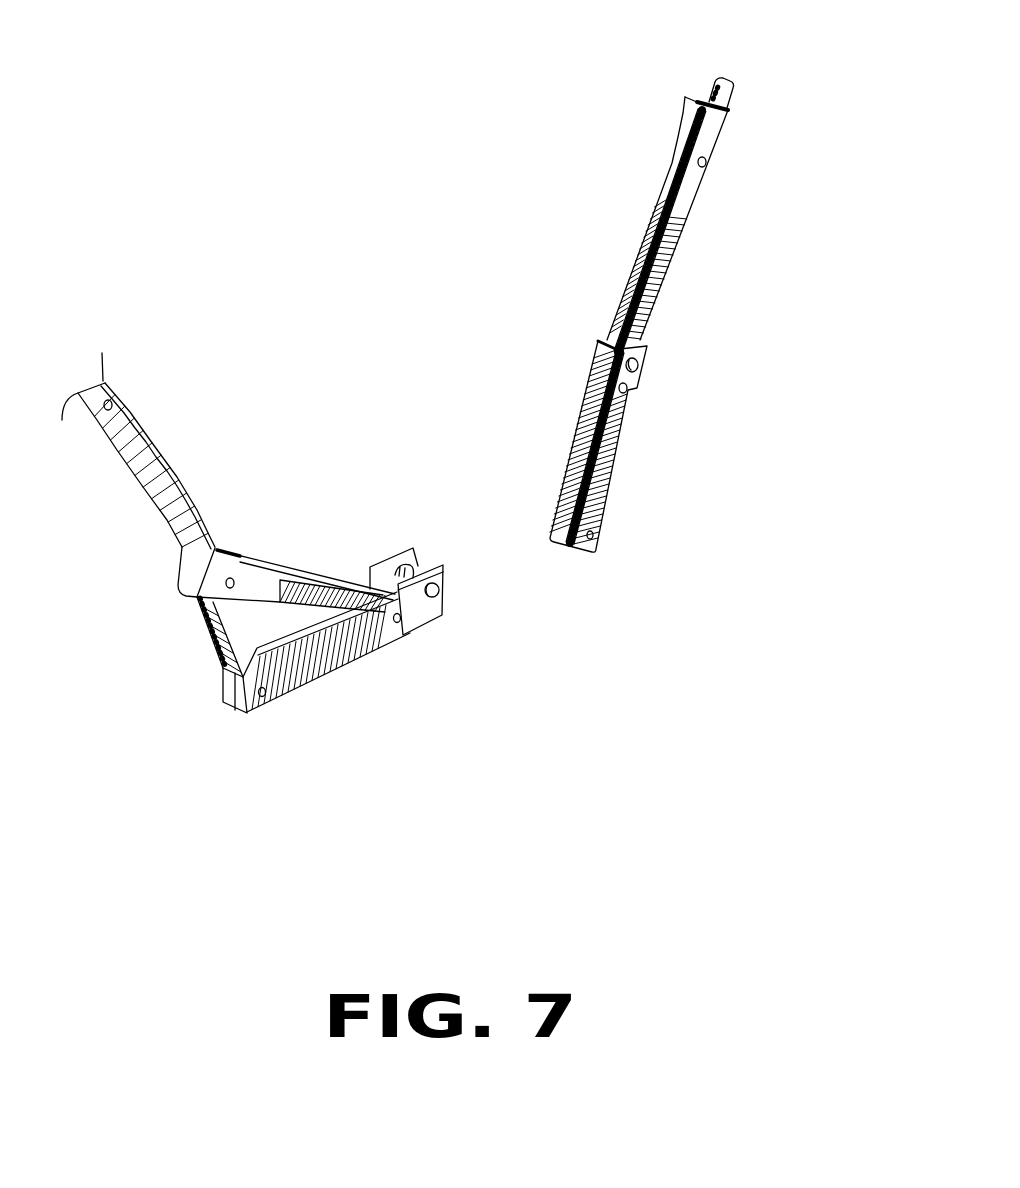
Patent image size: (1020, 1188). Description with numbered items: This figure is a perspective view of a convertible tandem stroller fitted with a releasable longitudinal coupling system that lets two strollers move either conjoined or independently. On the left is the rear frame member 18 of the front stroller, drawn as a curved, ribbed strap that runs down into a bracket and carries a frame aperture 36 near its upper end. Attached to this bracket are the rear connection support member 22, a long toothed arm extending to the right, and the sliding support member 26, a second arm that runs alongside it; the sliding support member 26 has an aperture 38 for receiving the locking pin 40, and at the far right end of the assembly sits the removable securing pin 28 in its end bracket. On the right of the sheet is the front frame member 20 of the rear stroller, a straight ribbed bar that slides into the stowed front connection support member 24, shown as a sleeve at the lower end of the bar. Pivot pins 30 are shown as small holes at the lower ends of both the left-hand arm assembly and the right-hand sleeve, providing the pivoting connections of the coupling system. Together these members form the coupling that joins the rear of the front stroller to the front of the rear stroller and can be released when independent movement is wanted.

The rear frame member 18 is at (143, 445).
The front frame member 20 is at (727, 80).
The rear connection support member 22 is at (383, 640).
The front connection support member 24 is at (607, 360).
The sliding support member 26 is at (680, 240).
The removable securing pin 28 is at (438, 598).
The pivot pins 30 is at (637, 402).
The frame aperture 36 is at (113, 402).
The aperture 38 is at (543, 372).
The locking pin 40 is at (708, 163).